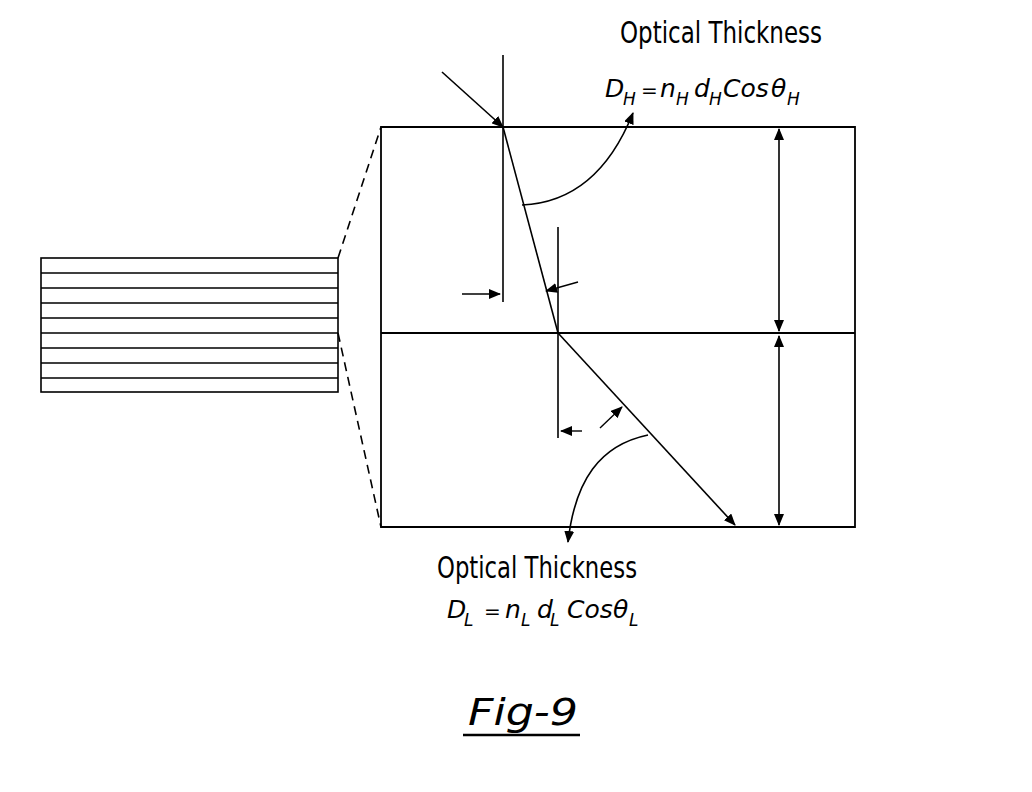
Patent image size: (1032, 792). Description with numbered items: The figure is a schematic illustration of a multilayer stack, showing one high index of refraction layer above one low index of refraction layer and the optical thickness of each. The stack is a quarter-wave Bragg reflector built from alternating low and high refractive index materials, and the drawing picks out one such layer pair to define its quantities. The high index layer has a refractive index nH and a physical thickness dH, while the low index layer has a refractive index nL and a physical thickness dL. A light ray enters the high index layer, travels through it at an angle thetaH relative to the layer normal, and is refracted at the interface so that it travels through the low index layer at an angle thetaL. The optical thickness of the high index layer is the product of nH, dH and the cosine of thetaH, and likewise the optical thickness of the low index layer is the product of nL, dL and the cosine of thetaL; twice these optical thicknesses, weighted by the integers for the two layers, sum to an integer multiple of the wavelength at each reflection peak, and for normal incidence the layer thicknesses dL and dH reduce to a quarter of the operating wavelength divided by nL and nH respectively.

The refractive index of high refractive index material nH is at (618, 230).
The refractive index of low refractive index material nL is at (618, 430).
The thickness of high refractive index material dH is at (754, 230).
The thickness of low refractive index material dL is at (755, 430).
The angle of light in high refractive index layer thetaH is at (520, 303).
The angle of light in low refractive index layer thetaL is at (591, 423).